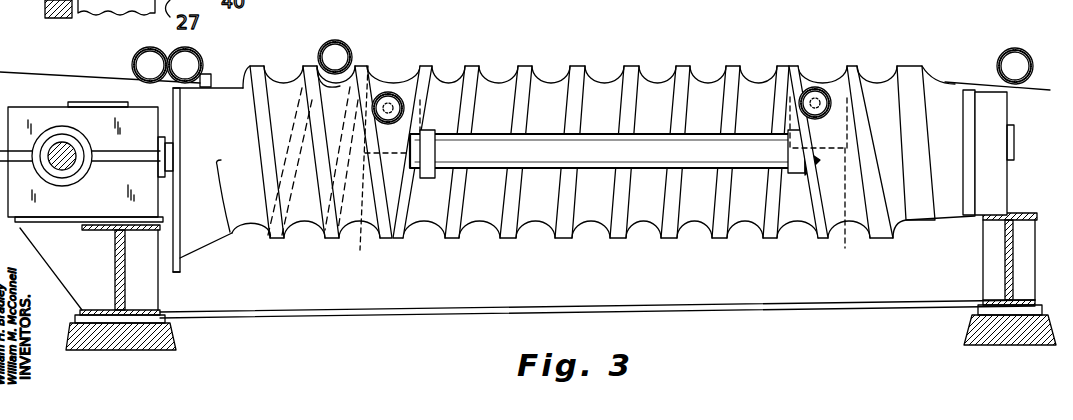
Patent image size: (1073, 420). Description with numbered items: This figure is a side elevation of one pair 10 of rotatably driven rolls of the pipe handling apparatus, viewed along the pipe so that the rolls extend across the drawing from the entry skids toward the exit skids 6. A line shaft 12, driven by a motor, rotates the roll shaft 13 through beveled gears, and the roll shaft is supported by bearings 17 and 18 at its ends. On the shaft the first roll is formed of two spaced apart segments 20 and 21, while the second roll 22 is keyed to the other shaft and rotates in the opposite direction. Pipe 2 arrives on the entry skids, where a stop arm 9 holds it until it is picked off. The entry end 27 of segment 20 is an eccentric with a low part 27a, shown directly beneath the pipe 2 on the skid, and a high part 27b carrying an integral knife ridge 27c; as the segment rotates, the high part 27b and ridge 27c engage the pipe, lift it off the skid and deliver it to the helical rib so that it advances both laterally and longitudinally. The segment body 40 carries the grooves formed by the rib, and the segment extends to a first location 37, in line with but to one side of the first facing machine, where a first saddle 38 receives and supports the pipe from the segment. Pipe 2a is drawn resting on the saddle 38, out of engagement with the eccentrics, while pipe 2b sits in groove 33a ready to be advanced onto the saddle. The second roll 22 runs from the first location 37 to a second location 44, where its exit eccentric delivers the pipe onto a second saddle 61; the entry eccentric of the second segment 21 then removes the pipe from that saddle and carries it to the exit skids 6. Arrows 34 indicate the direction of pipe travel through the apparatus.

The pipe 2 is at (203, 58).
The pipe 2a is at (400, 117).
The pipe 2b is at (350, 43).
The exit skids 6 is at (1043, 89).
The stop arm 9 is at (221, 87).
The pair of rolls 10 is at (582, 66).
The line shaft 12 is at (55, 150).
The roll shaft 13 is at (612, 134).
The bearing 17 is at (52, 78).
The bearing 18 is at (997, 107).
The segment 20 is at (214, 233).
The segment 21 is at (905, 64).
The second roll 22 is at (631, 66).
The entry end 27 is at (538, 219).
The low part 27a is at (198, 90).
The high part 27b is at (197, 240).
The knife ridge 27c is at (178, 258).
The groove 33a is at (306, 66).
The arrows 34 is at (1058, 70).
The first location 37 is at (390, 90).
The first saddle 38 is at (380, 171).
The segment body 40 is at (242, 84).
The second location 44 is at (814, 70).
The second saddle 61 is at (826, 167).